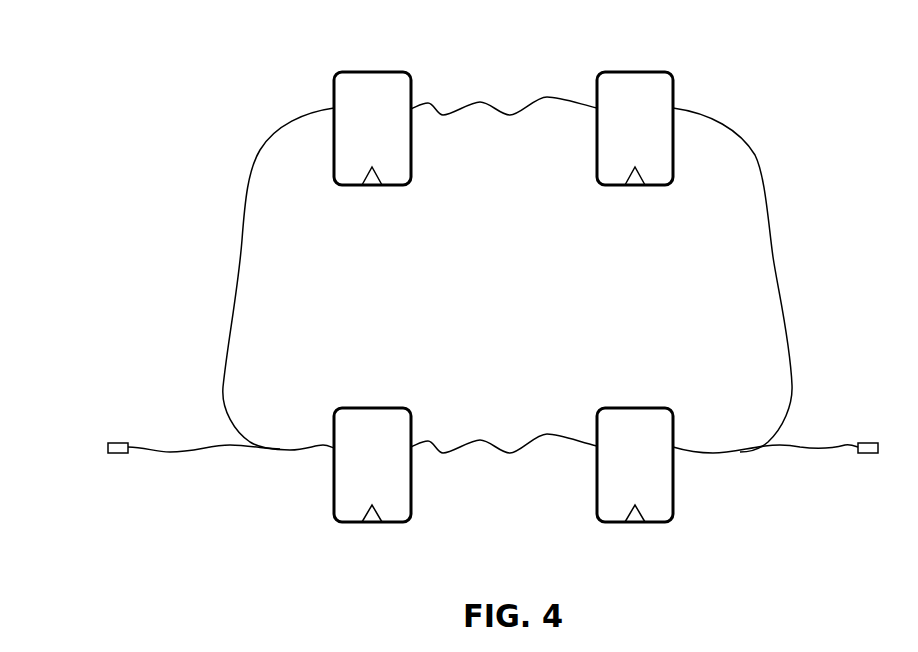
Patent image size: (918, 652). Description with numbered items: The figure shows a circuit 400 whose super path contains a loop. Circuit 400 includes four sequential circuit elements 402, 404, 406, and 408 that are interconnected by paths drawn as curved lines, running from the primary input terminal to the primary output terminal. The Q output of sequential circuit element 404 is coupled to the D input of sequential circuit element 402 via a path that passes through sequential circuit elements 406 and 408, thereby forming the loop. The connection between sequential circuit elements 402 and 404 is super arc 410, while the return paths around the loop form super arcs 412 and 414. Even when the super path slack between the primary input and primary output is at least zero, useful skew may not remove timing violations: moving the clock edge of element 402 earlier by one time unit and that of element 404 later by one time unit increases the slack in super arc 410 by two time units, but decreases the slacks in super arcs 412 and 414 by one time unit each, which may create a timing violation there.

The circuit 400 is at (158, 142).
The sequential circuit element 402 is at (372, 465).
The sequential circuit element 404 is at (635, 465).
The sequential circuit element 406 is at (635, 128).
The sequential circuit element 408 is at (372, 128).
The super arc 410 is at (504, 418).
The super arc 412 is at (783, 280).
The super arc 414 is at (223, 278).